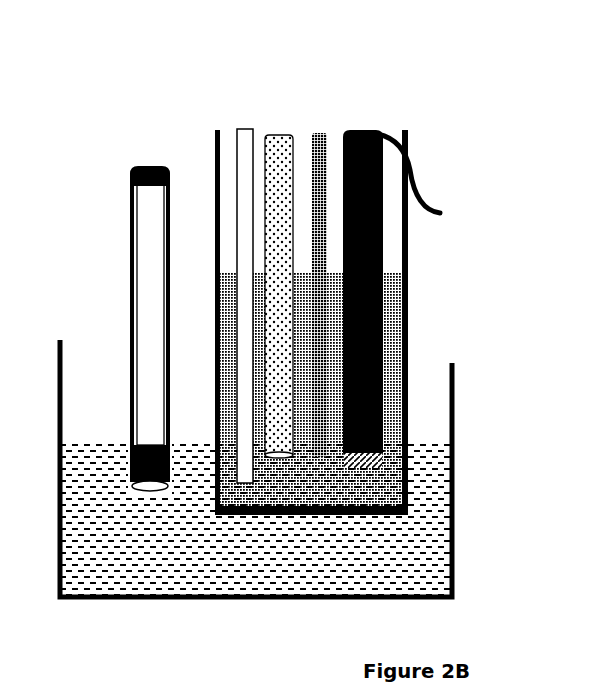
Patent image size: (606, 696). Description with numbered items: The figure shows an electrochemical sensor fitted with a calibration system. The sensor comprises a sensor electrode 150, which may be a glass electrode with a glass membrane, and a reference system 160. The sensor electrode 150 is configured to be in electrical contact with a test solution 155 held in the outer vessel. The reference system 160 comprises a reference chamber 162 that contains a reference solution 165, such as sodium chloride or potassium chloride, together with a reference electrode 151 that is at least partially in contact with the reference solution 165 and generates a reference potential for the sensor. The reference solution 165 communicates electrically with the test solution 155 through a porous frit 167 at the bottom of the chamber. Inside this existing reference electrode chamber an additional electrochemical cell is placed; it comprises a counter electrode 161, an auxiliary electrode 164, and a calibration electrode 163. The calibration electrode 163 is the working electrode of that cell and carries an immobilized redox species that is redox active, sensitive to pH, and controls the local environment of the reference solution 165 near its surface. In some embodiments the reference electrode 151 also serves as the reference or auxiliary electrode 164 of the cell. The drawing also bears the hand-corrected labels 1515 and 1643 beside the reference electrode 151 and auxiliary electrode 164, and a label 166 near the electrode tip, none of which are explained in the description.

The sensor electrode 150 is at (133, 228).
The test solution 155 is at (273, 571).
The reference system 160 is at (356, 277).
The reference electrode 151 is at (193, 281).
The white rod electrode (as labeled) 1515 is at (238, 129).
The counter electrode 161 is at (265, 133).
The reference chamber 162 is at (408, 142).
The calibration electrode 163 is at (317, 135).
The auxiliary electrode 164 is at (426, 291).
The working electrode (as labeled) 1643 is at (383, 252).
The reference solution 165 is at (393, 355).
The electrode tip region 166 is at (378, 462).
The porous frit 167 is at (378, 509).